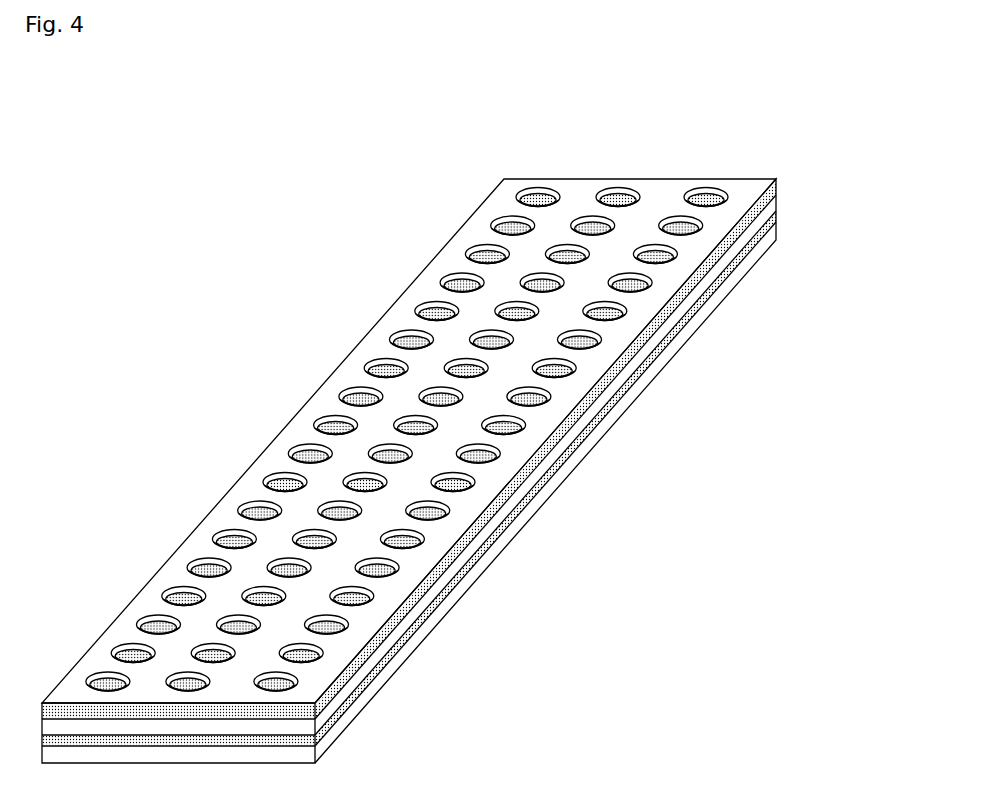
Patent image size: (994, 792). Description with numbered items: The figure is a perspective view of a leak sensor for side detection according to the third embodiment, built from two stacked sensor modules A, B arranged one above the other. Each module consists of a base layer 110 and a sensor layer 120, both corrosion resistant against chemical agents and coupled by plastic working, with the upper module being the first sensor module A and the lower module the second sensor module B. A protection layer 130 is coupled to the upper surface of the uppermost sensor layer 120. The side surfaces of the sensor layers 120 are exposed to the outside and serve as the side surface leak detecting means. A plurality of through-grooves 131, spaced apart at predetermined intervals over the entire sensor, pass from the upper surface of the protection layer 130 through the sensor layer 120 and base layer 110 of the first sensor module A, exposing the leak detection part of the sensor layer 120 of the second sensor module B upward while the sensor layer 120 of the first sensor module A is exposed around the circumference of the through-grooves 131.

The protection layer 130 is at (661, 197).
The through-grooves 131 is at (533, 189).
The sensor layer 120 is at (777, 183).
The base layer 110 is at (777, 201).
The first sensor module A is at (830, 141).
The second sensor module B is at (832, 283).